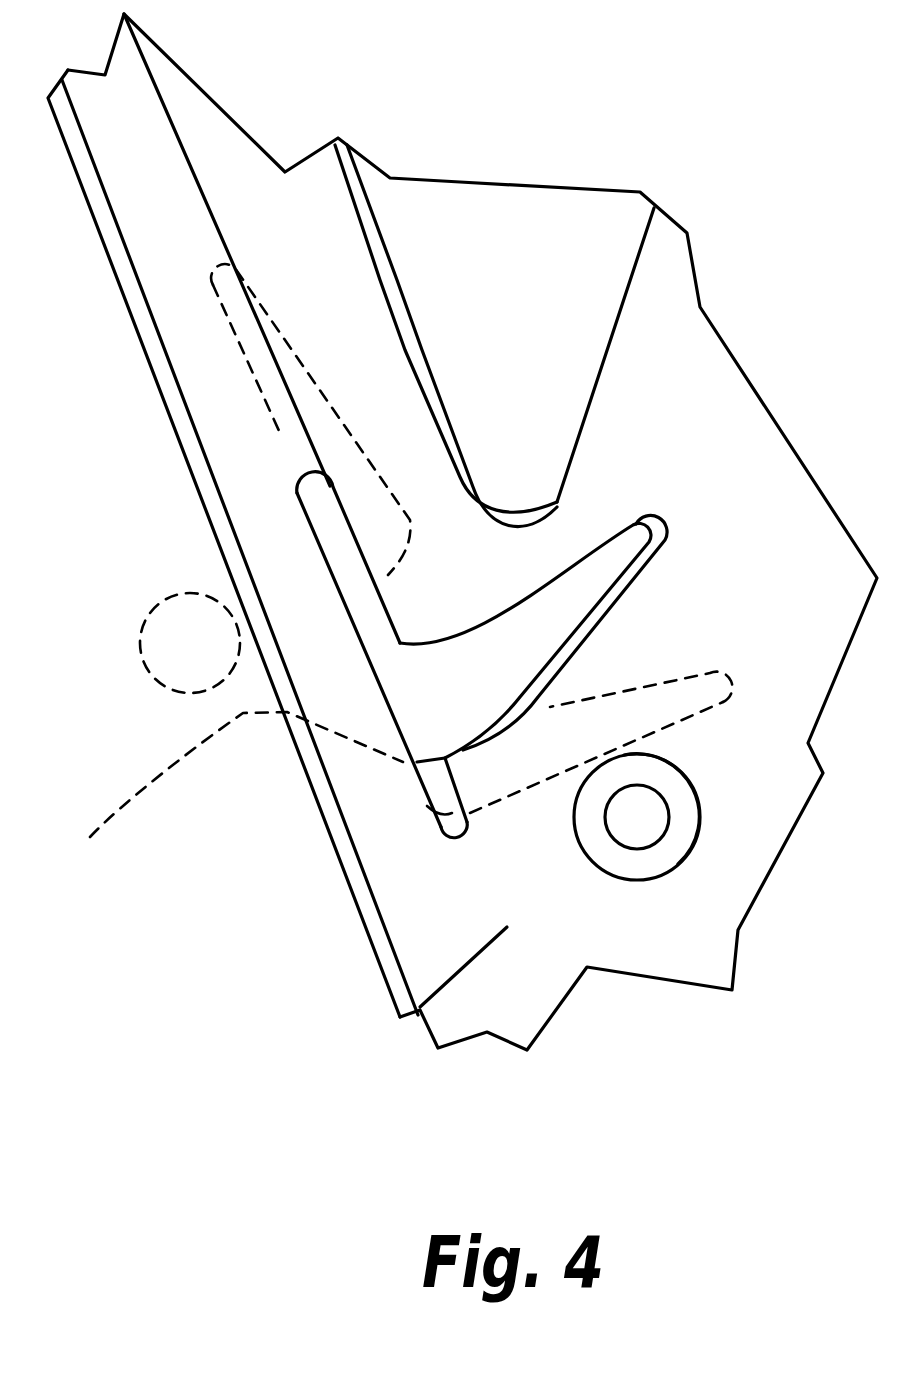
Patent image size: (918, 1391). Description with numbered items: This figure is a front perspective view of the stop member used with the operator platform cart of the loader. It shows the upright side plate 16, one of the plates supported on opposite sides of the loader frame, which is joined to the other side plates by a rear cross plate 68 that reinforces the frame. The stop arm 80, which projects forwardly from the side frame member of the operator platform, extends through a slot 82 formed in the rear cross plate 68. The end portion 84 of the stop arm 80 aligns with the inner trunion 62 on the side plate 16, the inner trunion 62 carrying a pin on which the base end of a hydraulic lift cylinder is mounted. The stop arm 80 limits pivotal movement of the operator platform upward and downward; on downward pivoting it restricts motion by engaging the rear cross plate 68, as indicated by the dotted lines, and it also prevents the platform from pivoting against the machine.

The upright side plate 16 is at (577, 942).
The inner trunion 62 is at (623, 865).
The rear cross plate 68 is at (200, 400).
The stop arm 80 is at (283, 341).
The slot 82 is at (348, 582).
The end portion 84 is at (612, 560).